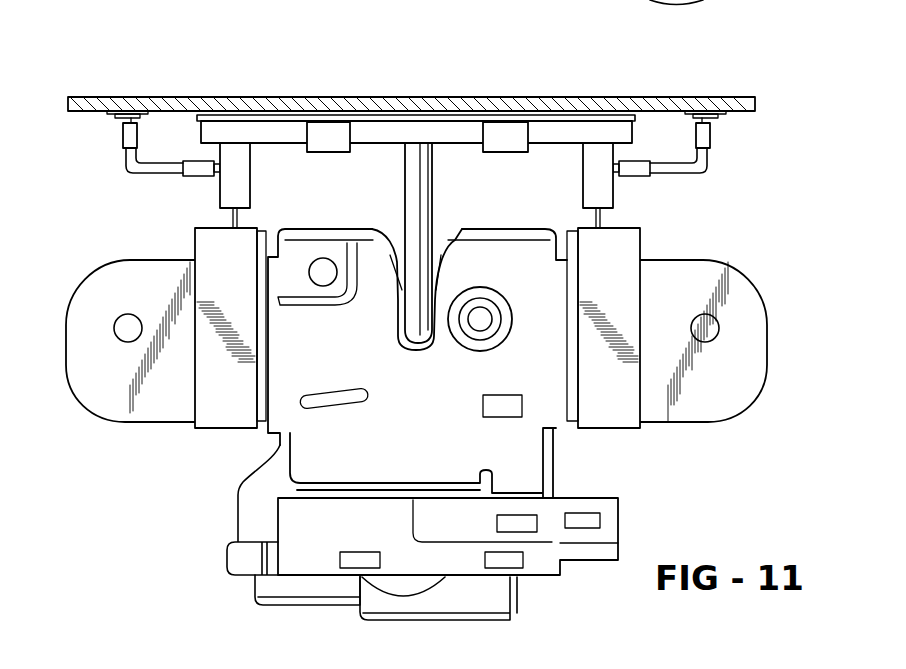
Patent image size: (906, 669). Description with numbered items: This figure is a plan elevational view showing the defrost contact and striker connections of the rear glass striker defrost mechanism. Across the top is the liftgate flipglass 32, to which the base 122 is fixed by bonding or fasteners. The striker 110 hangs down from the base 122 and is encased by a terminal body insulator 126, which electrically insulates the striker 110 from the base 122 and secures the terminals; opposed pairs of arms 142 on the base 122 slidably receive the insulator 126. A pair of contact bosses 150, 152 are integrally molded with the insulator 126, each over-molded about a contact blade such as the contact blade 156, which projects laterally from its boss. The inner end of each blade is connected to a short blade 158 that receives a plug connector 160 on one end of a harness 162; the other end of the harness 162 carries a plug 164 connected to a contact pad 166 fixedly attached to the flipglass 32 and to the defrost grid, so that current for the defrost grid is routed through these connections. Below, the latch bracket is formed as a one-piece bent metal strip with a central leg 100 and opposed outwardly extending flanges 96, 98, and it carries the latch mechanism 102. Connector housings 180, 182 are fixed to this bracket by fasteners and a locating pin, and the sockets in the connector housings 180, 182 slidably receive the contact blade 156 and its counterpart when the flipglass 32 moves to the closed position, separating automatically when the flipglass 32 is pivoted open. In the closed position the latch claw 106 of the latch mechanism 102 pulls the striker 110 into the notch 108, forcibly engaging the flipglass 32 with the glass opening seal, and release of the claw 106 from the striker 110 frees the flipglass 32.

The flipglass 32 is at (110, 99).
The contact pad 166 is at (140, 108).
The plug 164 is at (125, 133).
The harness 162 is at (137, 174).
The plug connector 160 is at (193, 178).
The short blade 158 is at (618, 174).
The base 122 is at (371, 116).
The terminal body insulator 126 is at (283, 130).
The arms 142 is at (330, 130).
The contact boss 150 is at (248, 174).
The contact boss 152 is at (600, 150).
The contact blade 156 is at (222, 150).
The flange 98 is at (112, 410).
The flange 96 is at (720, 408).
The connector housing 180 is at (212, 428).
The connector housing 182 is at (633, 268).
The central leg 100 is at (557, 430).
The notch 108 is at (397, 232).
The striker 110 is at (428, 165).
The latch claw 106 is at (442, 241).
The latch mechanism 102 is at (253, 532).